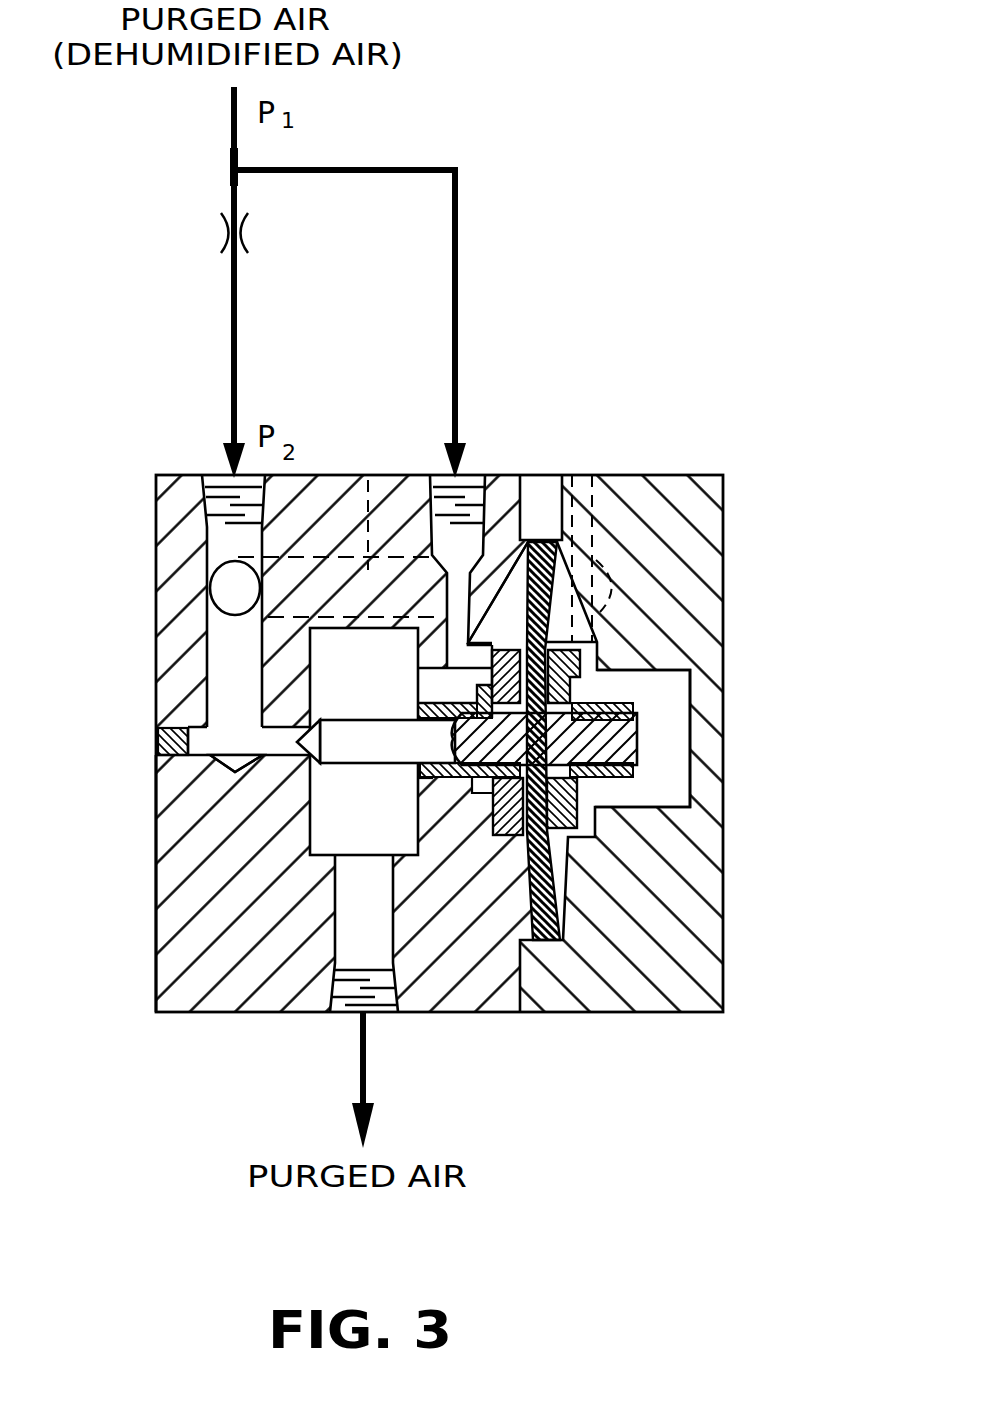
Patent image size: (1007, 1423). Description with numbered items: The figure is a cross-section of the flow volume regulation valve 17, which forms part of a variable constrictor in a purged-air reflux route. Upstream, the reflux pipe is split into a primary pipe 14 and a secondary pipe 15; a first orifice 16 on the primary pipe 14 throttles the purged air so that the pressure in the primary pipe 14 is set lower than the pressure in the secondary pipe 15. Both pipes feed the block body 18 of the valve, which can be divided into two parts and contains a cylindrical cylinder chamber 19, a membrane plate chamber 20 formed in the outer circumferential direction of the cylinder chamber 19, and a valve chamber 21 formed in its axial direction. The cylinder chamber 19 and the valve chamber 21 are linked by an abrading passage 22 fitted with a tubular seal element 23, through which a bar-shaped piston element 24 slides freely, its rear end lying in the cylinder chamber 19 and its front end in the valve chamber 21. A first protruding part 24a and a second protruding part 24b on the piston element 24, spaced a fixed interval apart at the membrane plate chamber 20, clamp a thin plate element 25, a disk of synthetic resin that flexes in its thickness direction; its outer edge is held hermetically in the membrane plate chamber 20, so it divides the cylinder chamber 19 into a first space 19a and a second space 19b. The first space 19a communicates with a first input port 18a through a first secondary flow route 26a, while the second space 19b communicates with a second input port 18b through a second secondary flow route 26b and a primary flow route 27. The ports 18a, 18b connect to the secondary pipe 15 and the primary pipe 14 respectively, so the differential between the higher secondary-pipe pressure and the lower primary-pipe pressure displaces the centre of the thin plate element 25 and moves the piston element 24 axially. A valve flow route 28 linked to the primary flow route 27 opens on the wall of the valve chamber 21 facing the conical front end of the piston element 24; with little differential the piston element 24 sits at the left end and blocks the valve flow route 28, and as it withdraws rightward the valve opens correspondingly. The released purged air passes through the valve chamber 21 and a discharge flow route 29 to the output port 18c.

The primary pipe 14 is at (233, 350).
The secondary pipe 15 is at (457, 350).
The first orifice 16 is at (220, 233).
The flow volume regulation valve 17 is at (752, 484).
The block body 18 is at (698, 562).
The first input port 18a is at (472, 475).
The second input port 18b is at (215, 475).
The output port 18c is at (345, 1013).
The cylinder chamber 19 is at (829, 732).
The first space 19a is at (575, 812).
The second space 19b is at (673, 790).
The membrane plate chamber 20 is at (552, 845).
The valve chamber 21 is at (381, 823).
The abrading passage 22 is at (482, 793).
The tubular seal element 23 is at (433, 777).
The piston element 24 is at (625, 738).
The first protruding part 24a is at (578, 667).
The second protruding part 24b is at (577, 688).
The thin plate element 25 is at (547, 880).
The first secondary flow route 26a is at (470, 538).
The second secondary flow route 26b is at (370, 478).
The primary flow route 27 is at (217, 670).
The valve flow route 28 is at (287, 745).
The discharge flow route 29 is at (347, 913).